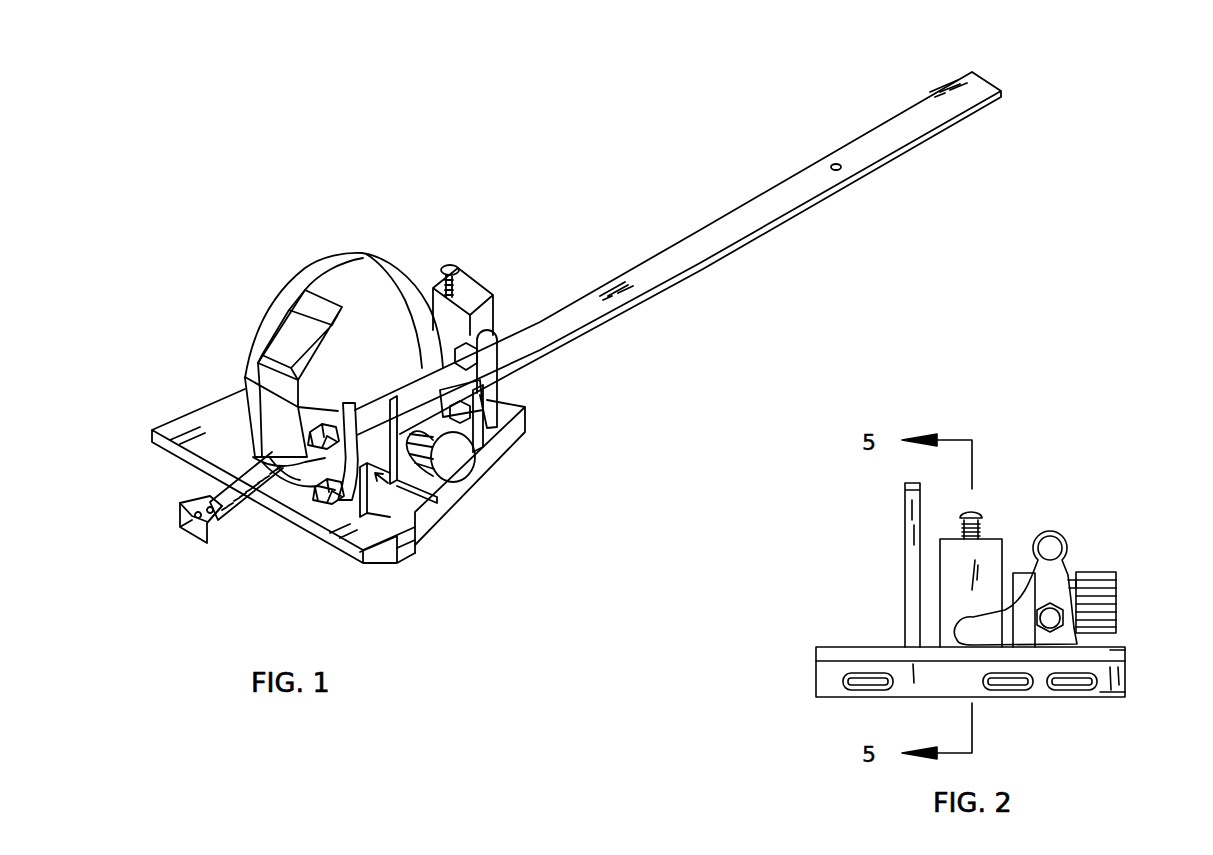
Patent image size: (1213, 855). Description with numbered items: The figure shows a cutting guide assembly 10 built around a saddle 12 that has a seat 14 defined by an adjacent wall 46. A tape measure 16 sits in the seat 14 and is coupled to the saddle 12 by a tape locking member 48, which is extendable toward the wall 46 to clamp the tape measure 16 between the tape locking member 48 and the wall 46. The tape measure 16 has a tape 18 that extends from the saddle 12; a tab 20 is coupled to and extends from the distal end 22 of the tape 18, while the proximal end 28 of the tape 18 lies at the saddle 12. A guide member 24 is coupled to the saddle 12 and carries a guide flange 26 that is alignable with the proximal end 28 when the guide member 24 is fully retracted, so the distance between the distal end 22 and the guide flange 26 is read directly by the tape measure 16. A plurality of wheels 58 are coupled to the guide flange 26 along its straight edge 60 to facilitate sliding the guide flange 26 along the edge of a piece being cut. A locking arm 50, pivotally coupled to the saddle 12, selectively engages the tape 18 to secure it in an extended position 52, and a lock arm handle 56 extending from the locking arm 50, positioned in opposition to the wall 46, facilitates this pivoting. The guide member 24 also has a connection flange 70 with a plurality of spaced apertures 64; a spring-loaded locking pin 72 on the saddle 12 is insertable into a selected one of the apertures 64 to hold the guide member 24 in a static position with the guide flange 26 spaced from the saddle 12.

In FIG. 1, the cutting guide assembly 10 is at (550, 166).
In FIG. 1, the saddle 12 is at (455, 508).
In FIG. 1, the seat 14 is at (422, 555).
In FIG. 1, the tape measure 16 is at (411, 308).
In FIG. 2, the tape measure 16 is at (971, 593).
In FIG. 1, the tape 18 is at (238, 503).
In FIG. 1, the tab 20 is at (185, 527).
In FIG. 1, the distal end 22 is at (178, 504).
In FIG. 1, the guide member 24 is at (396, 582).
In FIG. 2, the guide member 24 is at (1130, 708).
In FIG. 1, the guide flange 26 is at (370, 566).
In FIG. 2, the guide flange 26 is at (1120, 672).
In FIG. 1, the proximal end 28 is at (257, 443).
In FIG. 1, the wall 46 is at (270, 320).
In FIG. 2, the wall 46 is at (905, 565).
In FIG. 1, the tape locking member 48 is at (455, 463).
In FIG. 2, the tape locking member 48 is at (1013, 573).
In FIG. 1, the locking arm 50 is at (280, 478).
In FIG. 2, the locking arm 50 is at (965, 622).
In FIG. 1, the extended position 52 is at (190, 491).
In FIG. 1, the lock arm handle 56 is at (487, 300).
In FIG. 2, the wheels 58 is at (835, 684).
In FIG. 2, the straight edge 60 is at (917, 697).
In FIG. 1, the spaced apertures 64 is at (836, 164).
In FIG. 1, the connection flange 70 is at (598, 318).
In FIG. 1, the spring-loaded locking pin 72 is at (448, 266).
In FIG. 2, the spring-loaded locking pin 72 is at (975, 512).